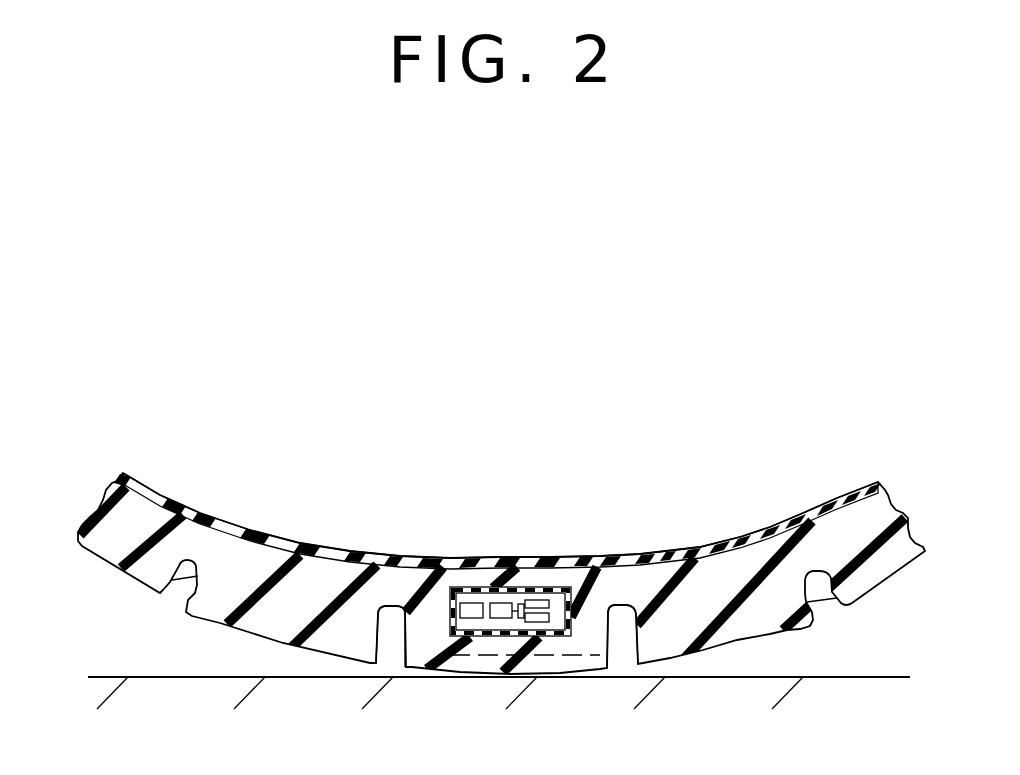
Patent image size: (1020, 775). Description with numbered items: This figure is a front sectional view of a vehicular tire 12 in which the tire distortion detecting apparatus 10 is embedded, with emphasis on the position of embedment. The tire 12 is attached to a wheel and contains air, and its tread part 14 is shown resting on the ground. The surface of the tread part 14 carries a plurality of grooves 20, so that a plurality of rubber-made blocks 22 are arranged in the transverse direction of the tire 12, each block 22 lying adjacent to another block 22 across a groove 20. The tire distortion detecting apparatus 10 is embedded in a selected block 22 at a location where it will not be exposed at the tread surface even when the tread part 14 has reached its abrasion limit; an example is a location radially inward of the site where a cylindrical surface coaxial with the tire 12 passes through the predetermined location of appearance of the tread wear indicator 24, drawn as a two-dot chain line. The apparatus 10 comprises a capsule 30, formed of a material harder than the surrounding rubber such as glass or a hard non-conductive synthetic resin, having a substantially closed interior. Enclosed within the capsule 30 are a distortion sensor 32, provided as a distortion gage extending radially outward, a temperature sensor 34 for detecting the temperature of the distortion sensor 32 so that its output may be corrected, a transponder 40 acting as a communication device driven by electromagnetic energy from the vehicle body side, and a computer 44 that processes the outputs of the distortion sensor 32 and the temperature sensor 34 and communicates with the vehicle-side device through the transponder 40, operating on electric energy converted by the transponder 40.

The tire distortion detecting apparatus 10 is at (509, 624).
The tire 12 is at (805, 477).
The tread part 14 is at (685, 540).
The grooves 20 is at (392, 612).
The blocks 22 is at (483, 647).
The tread wear indicator 24 is at (580, 656).
The capsule 30 is at (552, 590).
The distortion sensor 32 is at (532, 622).
The temperature sensor 34 is at (533, 605).
The transponder 40 is at (471, 612).
The computer 44 is at (500, 612).